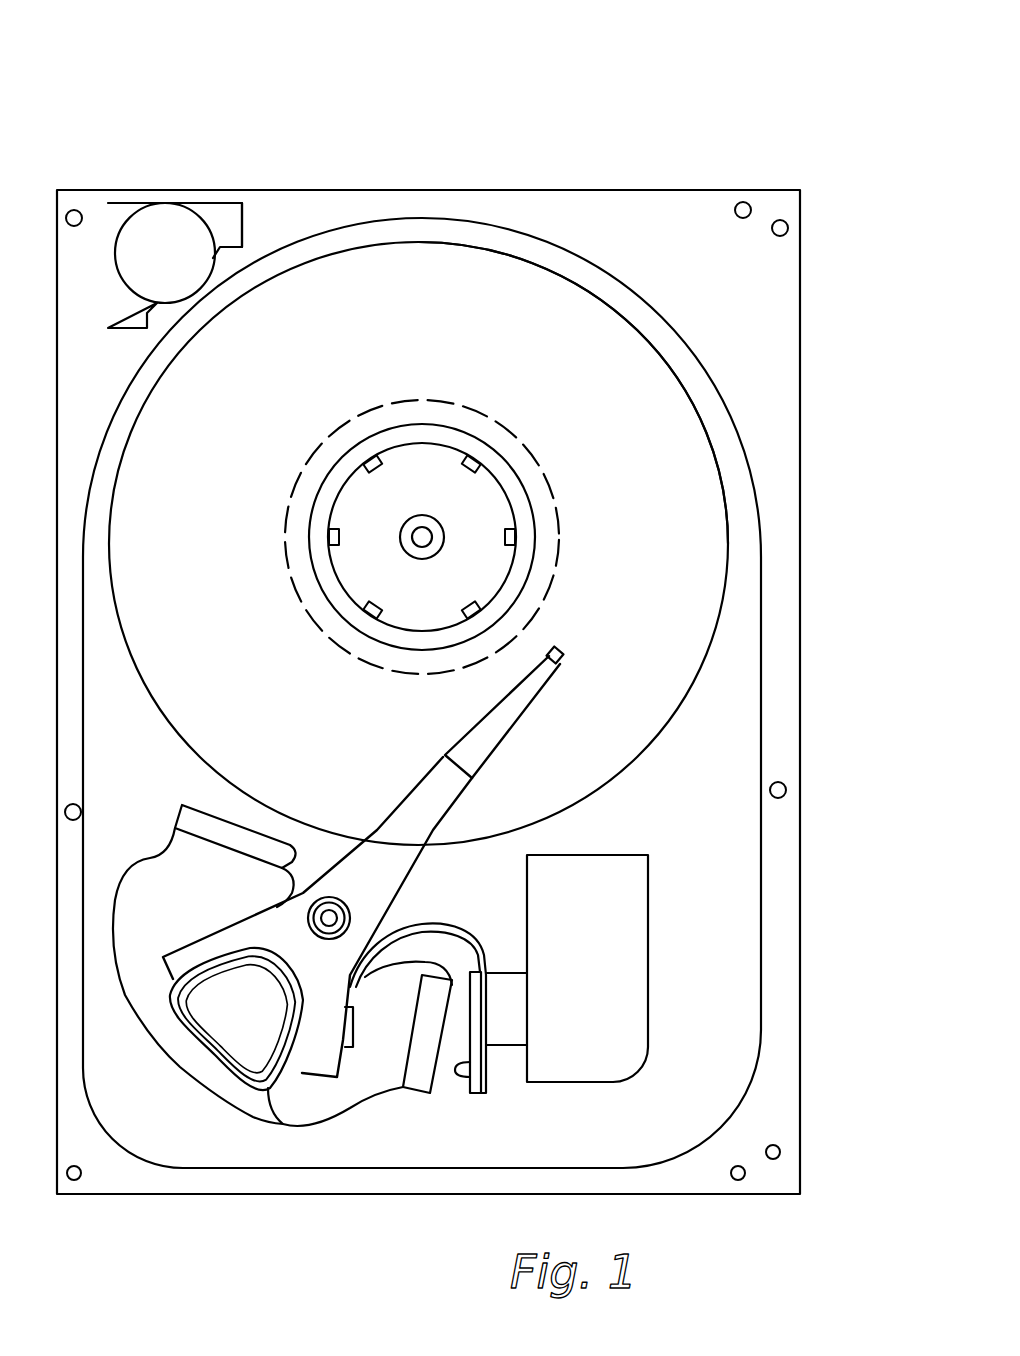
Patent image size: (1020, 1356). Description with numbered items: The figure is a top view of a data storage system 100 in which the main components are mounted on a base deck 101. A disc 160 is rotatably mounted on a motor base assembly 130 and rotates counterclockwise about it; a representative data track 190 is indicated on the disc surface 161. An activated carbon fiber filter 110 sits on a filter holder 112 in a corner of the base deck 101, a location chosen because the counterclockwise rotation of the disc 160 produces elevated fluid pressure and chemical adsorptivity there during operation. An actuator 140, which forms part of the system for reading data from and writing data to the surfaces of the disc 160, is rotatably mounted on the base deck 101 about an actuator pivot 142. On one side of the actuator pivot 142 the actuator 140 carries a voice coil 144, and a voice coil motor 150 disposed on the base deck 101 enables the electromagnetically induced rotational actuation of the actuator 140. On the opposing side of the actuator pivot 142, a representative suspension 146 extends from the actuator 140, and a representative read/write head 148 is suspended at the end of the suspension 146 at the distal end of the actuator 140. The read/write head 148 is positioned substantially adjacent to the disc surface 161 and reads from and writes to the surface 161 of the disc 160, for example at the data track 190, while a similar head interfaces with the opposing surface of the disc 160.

The data storage system 100 is at (233, 108).
The base deck 101 is at (800, 283).
The activated carbon fiber filter 110 is at (205, 228).
The filter holder 112 is at (244, 220).
The motor base assembly 130 is at (452, 503).
The actuator 140 is at (198, 942).
The actuator pivot 142 is at (344, 902).
The voice coil 144 is at (283, 1124).
The suspension 146 is at (517, 713).
The read/write head 148 is at (565, 652).
The voice coil motor 150 is at (142, 857).
The disc 160 is at (726, 492).
The disc surface 161 is at (667, 402).
The data track 190 is at (517, 440).